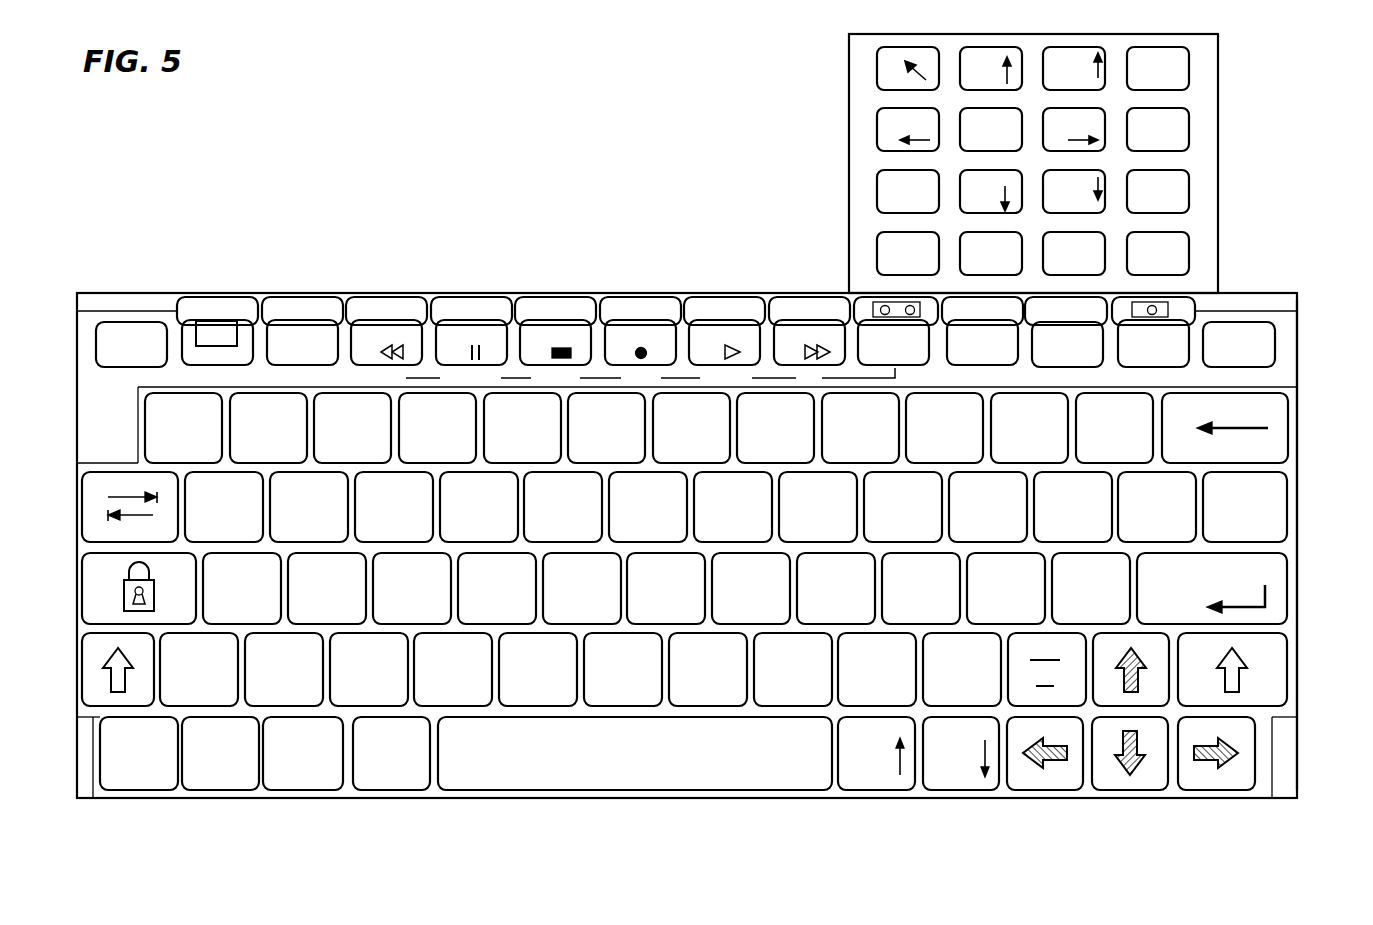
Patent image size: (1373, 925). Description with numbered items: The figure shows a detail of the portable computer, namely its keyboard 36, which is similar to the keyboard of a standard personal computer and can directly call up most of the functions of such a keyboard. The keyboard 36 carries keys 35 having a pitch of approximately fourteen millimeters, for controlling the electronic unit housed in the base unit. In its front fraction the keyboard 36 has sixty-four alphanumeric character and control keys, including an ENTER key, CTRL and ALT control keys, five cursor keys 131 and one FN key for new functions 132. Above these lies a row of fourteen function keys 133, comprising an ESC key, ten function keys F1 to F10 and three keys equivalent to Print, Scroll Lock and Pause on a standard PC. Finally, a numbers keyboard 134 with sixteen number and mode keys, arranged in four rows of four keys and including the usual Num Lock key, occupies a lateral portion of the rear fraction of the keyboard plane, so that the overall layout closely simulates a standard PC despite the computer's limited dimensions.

The keyboard 36 is at (145, 258).
The numbers keyboard 134 is at (825, 103).
The row of fourteen function keys 133 is at (1299, 350).
The key for new functions 132 is at (233, 779).
The cursor keys 131 is at (1157, 673).
The keys 35 is at (613, 690).